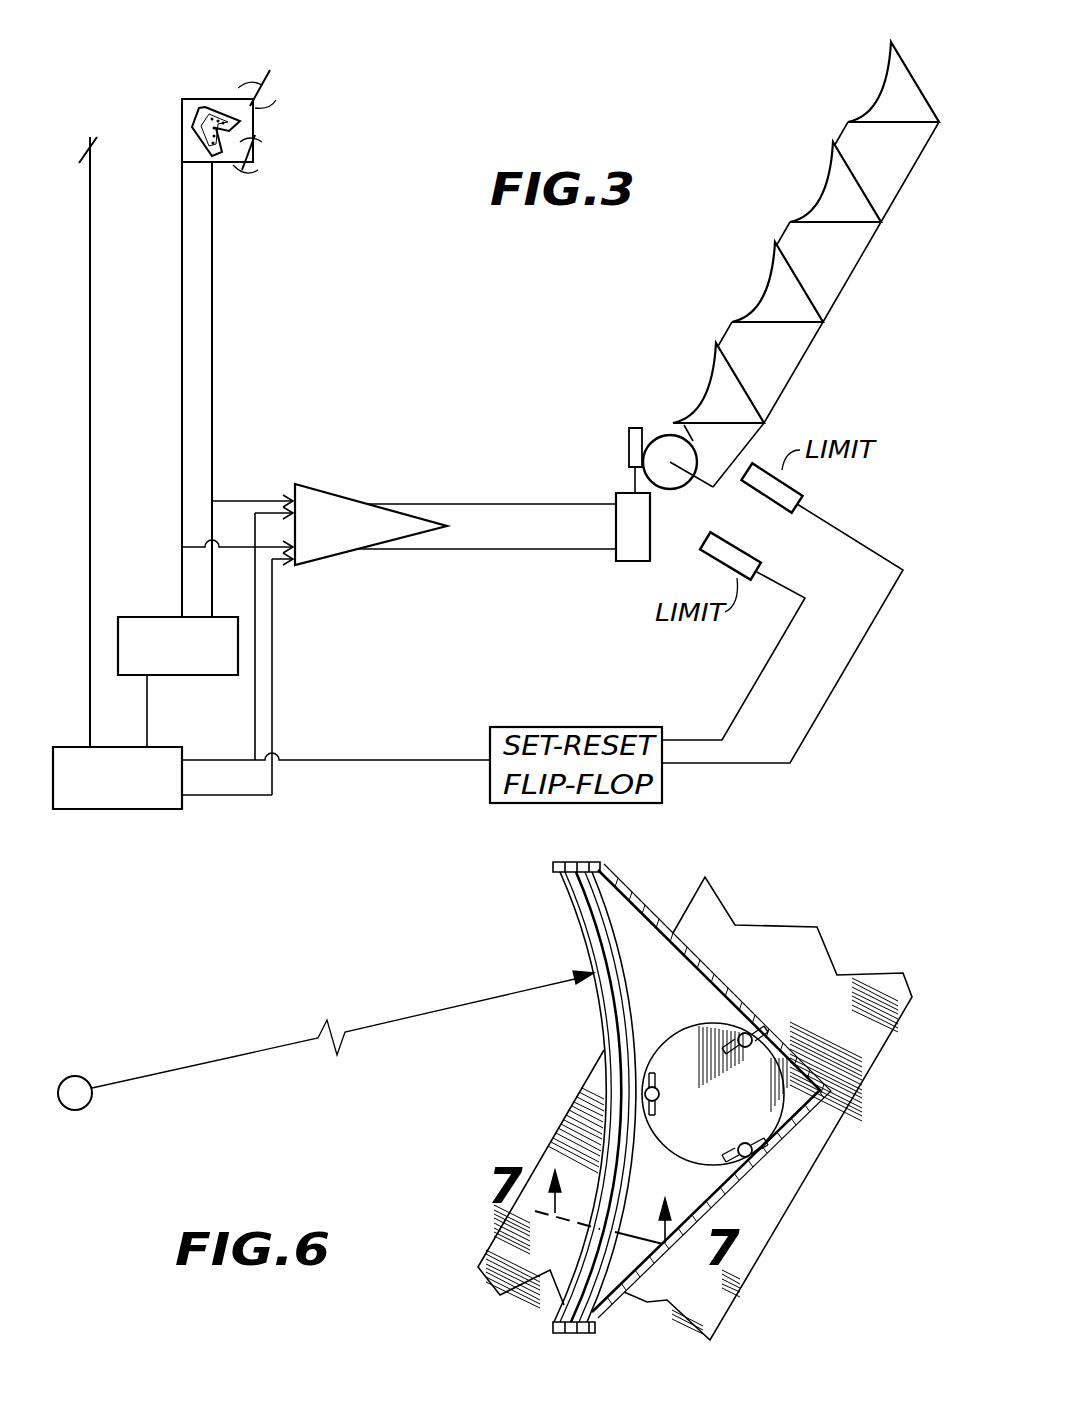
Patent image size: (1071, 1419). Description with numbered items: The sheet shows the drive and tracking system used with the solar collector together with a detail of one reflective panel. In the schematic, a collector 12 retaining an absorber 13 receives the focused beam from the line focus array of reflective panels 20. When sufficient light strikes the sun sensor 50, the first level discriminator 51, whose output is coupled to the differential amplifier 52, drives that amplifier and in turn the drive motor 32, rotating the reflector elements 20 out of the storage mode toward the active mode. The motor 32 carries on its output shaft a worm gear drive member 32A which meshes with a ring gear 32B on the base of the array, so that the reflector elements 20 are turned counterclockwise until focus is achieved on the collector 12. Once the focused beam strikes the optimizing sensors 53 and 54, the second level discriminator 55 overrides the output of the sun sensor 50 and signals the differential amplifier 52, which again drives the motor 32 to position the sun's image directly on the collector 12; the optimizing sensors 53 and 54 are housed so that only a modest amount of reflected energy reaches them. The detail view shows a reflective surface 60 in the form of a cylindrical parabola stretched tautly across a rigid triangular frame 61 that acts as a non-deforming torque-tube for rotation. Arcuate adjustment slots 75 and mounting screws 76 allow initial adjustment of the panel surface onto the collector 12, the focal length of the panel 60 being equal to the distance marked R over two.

In FIG. 3, the collector 12 is at (206, 97).
In FIG. 6, the collector 12 is at (86, 1077).
In FIG. 3, the absorber 13 is at (186, 134).
In FIG. 3, the reflective panels 20 is at (916, 72).
In FIG. 3, the drive motor 32 is at (625, 561).
In FIG. 3, the worm gear drive member 32A is at (629, 442).
In FIG. 3, the ring gear 32B is at (666, 435).
In FIG. 3, the sun sensor 50 is at (92, 138).
In FIG. 3, the No. 1 level discriminator 51 is at (124, 809).
In FIG. 3, the differential amplifier 52 is at (335, 484).
In FIG. 3, the optimizing sensor 53 is at (278, 78).
In FIG. 3, the optimizing sensor 54 is at (262, 172).
In FIG. 3, the No. 2 level discriminator 55 is at (141, 617).
In FIG. 6, the reflective surface 60 is at (581, 1262).
In FIG. 6, the triangular frame 61 is at (652, 1270).
In FIG. 6, the arcuate adjustment slots 75 is at (745, 1032).
In FIG. 6, the mounting screws 76 is at (757, 1036).